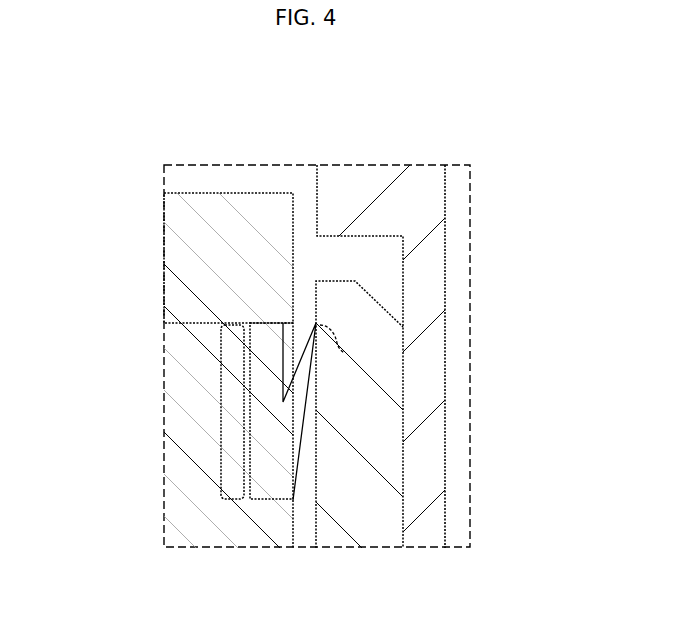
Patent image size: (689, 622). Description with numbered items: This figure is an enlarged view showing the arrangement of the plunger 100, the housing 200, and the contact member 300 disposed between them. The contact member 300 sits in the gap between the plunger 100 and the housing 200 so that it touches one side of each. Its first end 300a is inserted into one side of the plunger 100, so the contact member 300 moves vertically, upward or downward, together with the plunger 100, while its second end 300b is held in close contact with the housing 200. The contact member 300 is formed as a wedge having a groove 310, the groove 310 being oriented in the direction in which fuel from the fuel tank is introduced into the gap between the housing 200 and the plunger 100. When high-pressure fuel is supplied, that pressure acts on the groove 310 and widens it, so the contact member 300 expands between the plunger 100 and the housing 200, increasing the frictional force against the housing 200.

The plunger 100 is at (217, 193).
The housing 200 is at (427, 202).
The contact member 300 is at (278, 455).
The first end 300a is at (224, 415).
The second end 300b is at (322, 383).
The groove 310 is at (300, 348).